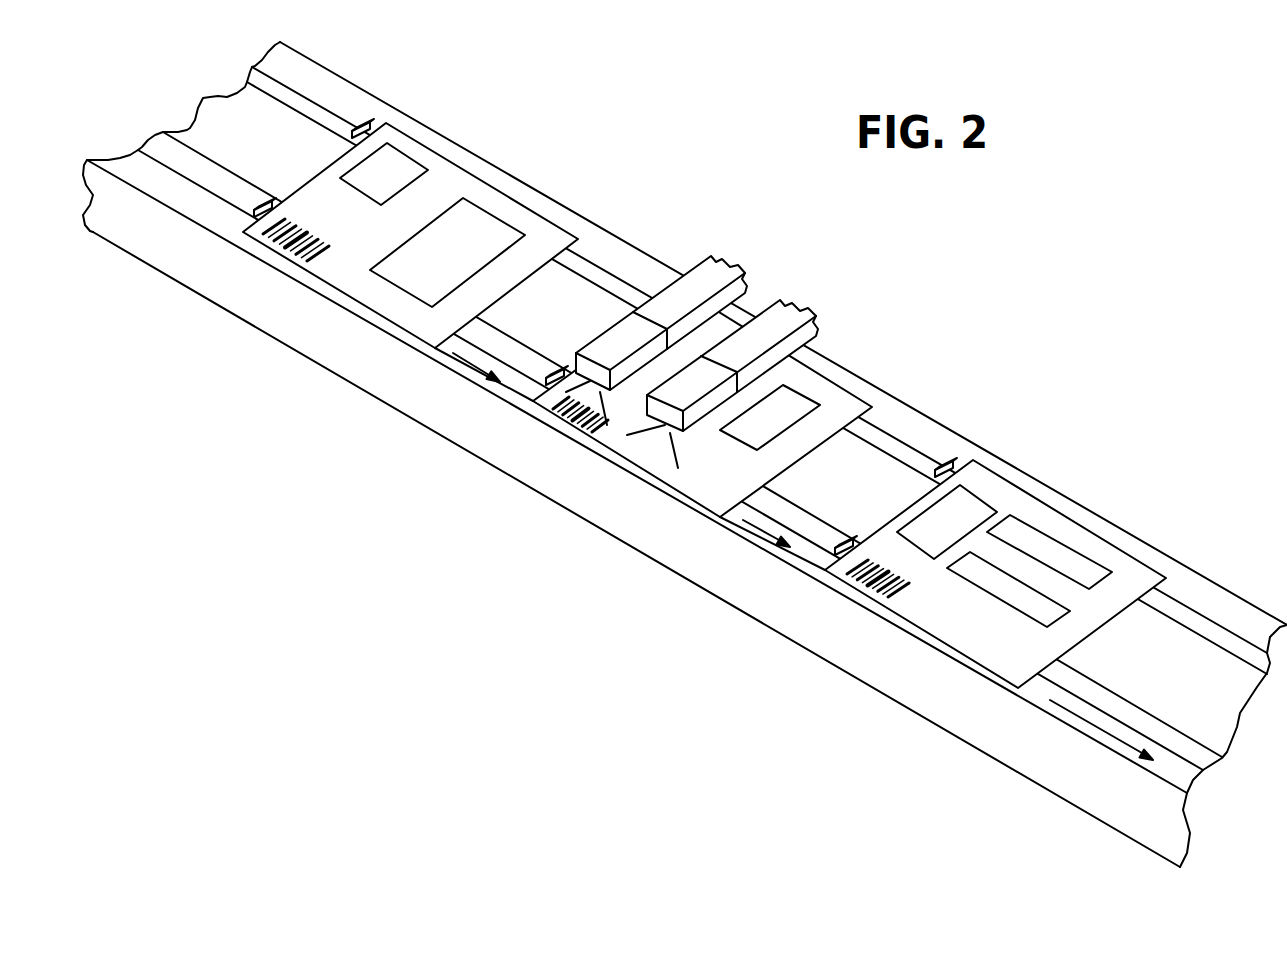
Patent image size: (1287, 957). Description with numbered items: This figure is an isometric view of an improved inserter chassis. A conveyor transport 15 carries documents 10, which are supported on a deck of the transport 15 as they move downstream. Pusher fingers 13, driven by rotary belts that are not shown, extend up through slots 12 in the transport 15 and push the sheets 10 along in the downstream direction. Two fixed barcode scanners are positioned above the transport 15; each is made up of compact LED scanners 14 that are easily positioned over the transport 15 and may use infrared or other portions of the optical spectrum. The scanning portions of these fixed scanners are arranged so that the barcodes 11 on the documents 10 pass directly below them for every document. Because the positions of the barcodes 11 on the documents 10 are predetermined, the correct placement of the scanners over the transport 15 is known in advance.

The documents 10 is at (495, 183).
The barcodes 11 is at (305, 223).
The slots 12 is at (1097, 693).
The pusher fingers 13 is at (352, 128).
The LED scanners 14 is at (618, 322).
The conveyor transport 15 is at (250, 300).